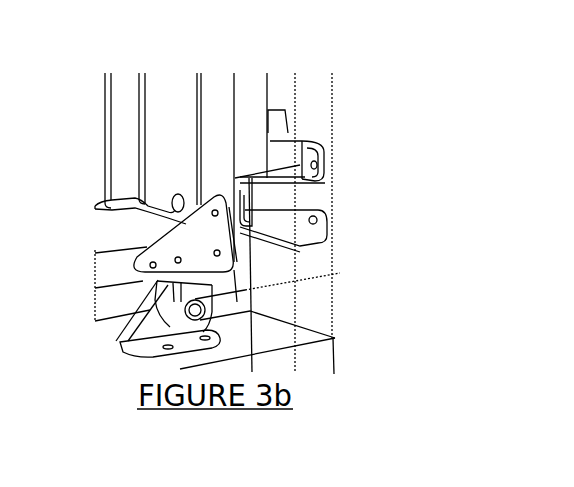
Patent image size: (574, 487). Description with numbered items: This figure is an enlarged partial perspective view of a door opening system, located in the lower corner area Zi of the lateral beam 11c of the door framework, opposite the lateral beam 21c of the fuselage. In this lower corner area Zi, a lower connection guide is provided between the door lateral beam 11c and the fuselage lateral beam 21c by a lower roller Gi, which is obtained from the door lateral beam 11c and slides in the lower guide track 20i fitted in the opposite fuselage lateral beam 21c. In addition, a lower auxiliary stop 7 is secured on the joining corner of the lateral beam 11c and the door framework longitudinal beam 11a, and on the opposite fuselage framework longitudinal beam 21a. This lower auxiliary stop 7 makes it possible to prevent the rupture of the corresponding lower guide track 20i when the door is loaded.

The lateral beam of the door framework 11c is at (195, 82).
The door framework longitudinal beam 11a is at (110, 235).
The lower roller Gi is at (225, 198).
The lower guide track 20i is at (315, 212).
The lower auxiliary stop 7 is at (166, 330).
The lower corner area Zi is at (344, 272).
The lateral beam of the fuselage 21c is at (307, 300).
The fuselage framework longitudinal beam 21a is at (307, 357).